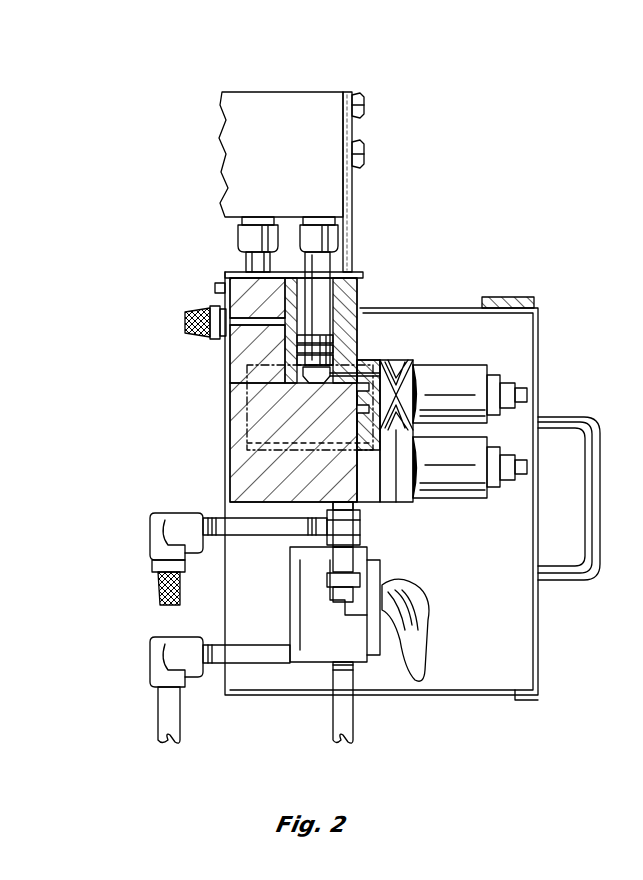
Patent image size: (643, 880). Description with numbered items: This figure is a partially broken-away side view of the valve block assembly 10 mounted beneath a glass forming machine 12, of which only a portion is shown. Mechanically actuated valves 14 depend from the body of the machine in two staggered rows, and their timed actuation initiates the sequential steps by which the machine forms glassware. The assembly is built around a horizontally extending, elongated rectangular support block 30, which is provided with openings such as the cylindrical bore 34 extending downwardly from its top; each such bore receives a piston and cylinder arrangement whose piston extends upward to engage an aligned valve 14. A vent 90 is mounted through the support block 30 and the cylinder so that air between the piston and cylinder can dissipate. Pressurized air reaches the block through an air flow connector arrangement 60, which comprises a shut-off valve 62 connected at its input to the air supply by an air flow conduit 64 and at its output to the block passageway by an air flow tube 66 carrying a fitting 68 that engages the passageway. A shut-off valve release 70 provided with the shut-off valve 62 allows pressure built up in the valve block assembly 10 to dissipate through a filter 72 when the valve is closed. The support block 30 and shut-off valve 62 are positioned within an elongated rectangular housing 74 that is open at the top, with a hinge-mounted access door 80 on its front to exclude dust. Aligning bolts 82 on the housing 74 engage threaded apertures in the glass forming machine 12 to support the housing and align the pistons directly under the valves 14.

The valve block assembly 10 is at (183, 292).
The glass forming machine 12 is at (394, 88).
The mechanically actuated valves 14 is at (250, 240).
The support block 30 is at (247, 392).
The cylindrical opening or bore 34 is at (506, 385).
The air flow connector arrangement 60 is at (400, 565).
The shut-off valve 62 is at (415, 598).
The air flow conduit 64 is at (354, 718).
The air flow tube 66 is at (362, 578).
The fitting 68 is at (362, 520).
The shut-off valve release 70 is at (178, 513).
The filter 72 is at (160, 585).
The housing 74 is at (425, 308).
The access door 80 is at (540, 352).
The aligning bolts 82 is at (364, 106).
The vent 90 is at (192, 328).